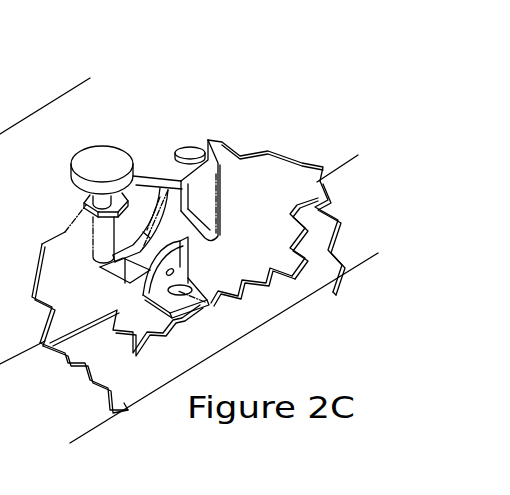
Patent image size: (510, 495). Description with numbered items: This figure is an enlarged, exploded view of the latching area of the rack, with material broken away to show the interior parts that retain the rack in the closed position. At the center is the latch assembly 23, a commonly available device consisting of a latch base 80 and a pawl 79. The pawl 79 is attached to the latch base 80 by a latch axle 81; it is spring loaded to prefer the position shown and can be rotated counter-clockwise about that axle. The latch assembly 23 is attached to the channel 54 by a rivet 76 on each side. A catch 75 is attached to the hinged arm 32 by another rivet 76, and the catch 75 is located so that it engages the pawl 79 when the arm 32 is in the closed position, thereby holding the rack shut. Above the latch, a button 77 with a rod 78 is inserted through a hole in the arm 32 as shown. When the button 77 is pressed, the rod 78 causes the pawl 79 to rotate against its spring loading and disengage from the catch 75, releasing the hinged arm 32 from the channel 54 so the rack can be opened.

The latch assembly 23 is at (190, 257).
The hinged arm 32 is at (338, 279).
The channel 54 is at (268, 312).
The catch 75 is at (216, 188).
The rivet 76 is at (190, 150).
The button 77 is at (82, 155).
The rod 78 is at (93, 247).
The pawl 79 is at (158, 209).
The latch base 80 is at (190, 278).
The latch axle 81 is at (163, 287).